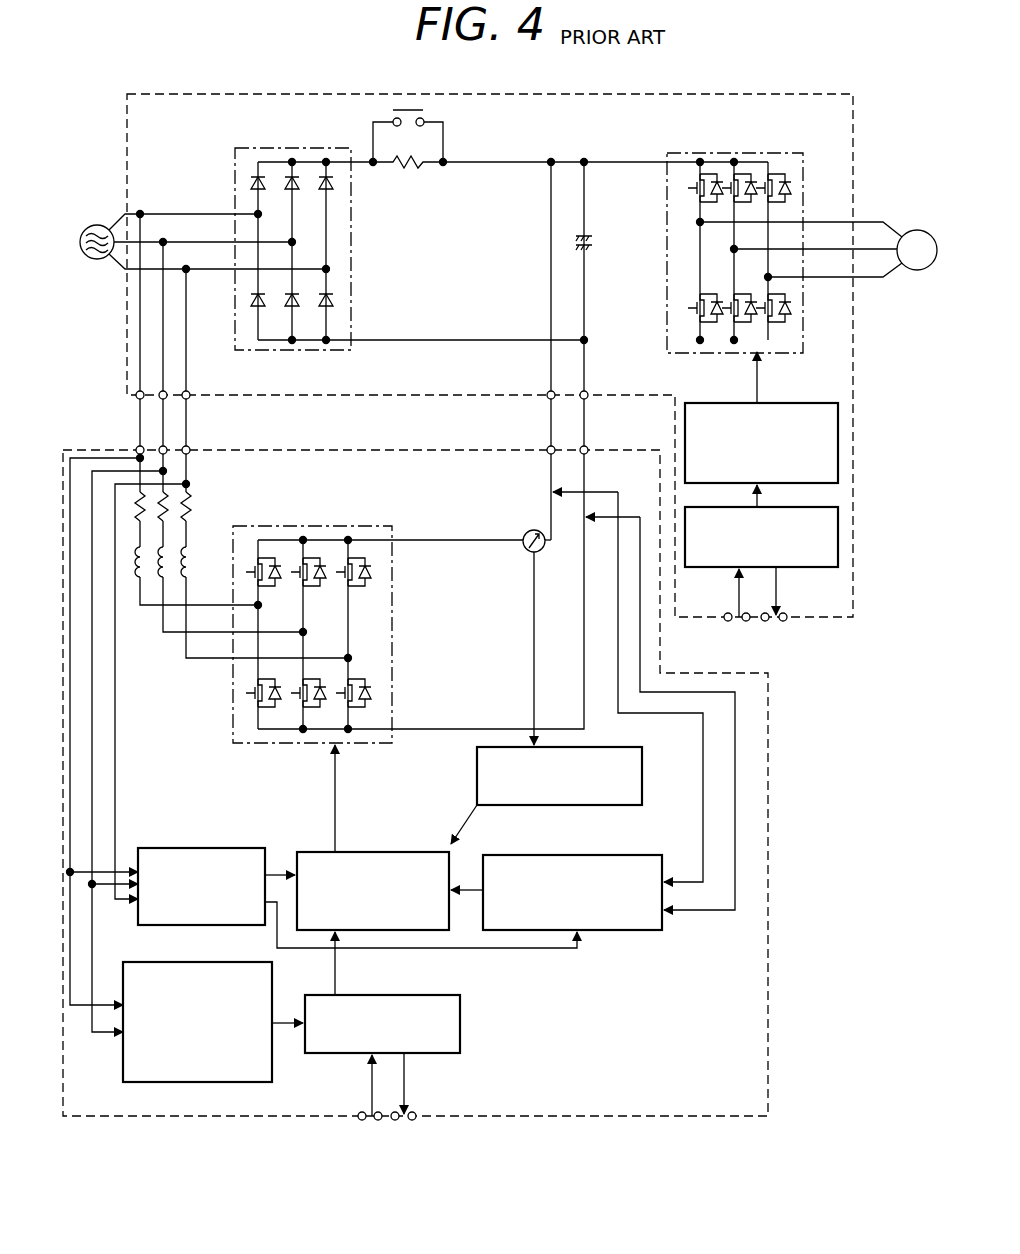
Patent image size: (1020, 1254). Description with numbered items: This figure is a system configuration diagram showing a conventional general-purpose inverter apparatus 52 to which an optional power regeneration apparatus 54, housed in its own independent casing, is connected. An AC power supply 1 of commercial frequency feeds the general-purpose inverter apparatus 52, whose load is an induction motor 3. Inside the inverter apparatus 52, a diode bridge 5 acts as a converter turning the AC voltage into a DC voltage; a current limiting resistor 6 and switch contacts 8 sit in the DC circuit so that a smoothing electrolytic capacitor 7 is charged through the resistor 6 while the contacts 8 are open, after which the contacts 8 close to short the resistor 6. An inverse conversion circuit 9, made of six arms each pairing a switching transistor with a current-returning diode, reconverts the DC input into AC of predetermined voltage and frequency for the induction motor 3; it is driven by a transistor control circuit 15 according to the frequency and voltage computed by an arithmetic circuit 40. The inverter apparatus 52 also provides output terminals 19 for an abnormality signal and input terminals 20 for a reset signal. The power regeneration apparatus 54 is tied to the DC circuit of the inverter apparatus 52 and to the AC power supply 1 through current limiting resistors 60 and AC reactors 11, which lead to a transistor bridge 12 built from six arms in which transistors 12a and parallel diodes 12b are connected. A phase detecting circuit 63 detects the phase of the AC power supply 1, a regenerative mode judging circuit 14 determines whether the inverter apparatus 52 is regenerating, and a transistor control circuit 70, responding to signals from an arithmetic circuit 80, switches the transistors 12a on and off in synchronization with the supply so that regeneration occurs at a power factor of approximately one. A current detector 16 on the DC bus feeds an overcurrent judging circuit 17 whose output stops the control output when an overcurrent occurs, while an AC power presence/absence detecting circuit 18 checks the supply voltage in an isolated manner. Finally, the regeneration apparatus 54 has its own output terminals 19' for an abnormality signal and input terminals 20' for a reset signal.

The AC power supply 1 is at (108, 226).
The induction motor 3 is at (912, 230).
The diode bridge 5 is at (320, 148).
The current limiting resistor 6 is at (412, 172).
The smoothing electrolytic capacitor 7 is at (592, 234).
The switch contacts 8 is at (408, 110).
The inverse conversion circuit 9 is at (682, 153).
The AC reactors 11 is at (128, 577).
The transistor bridge 12 is at (344, 625).
The transistors 12a is at (242, 702).
The diodes 12b is at (276, 706).
The regenerative mode judging circuit 14 is at (540, 855).
The transistor control circuit 15 is at (815, 403).
The current detector 16 is at (527, 532).
The overcurrent judging circuit 17 is at (642, 772).
The AC power presence/absence detecting circuit 18 is at (205, 962).
The output terminals 19 is at (775, 609).
The input terminals 20 is at (737, 610).
The output terminals 19' is at (407, 1102).
The input terminals 20' is at (367, 1103).
The arithmetic circuit 40 is at (818, 567).
The general-purpose inverter apparatus 52 is at (806, 94).
The power regeneration apparatus 54 is at (768, 722).
The current limiting resistors 60 is at (192, 512).
The phase detecting circuit 63 is at (240, 848).
The transistor control circuit 70 is at (362, 852).
The arithmetic circuit 80 is at (460, 1042).